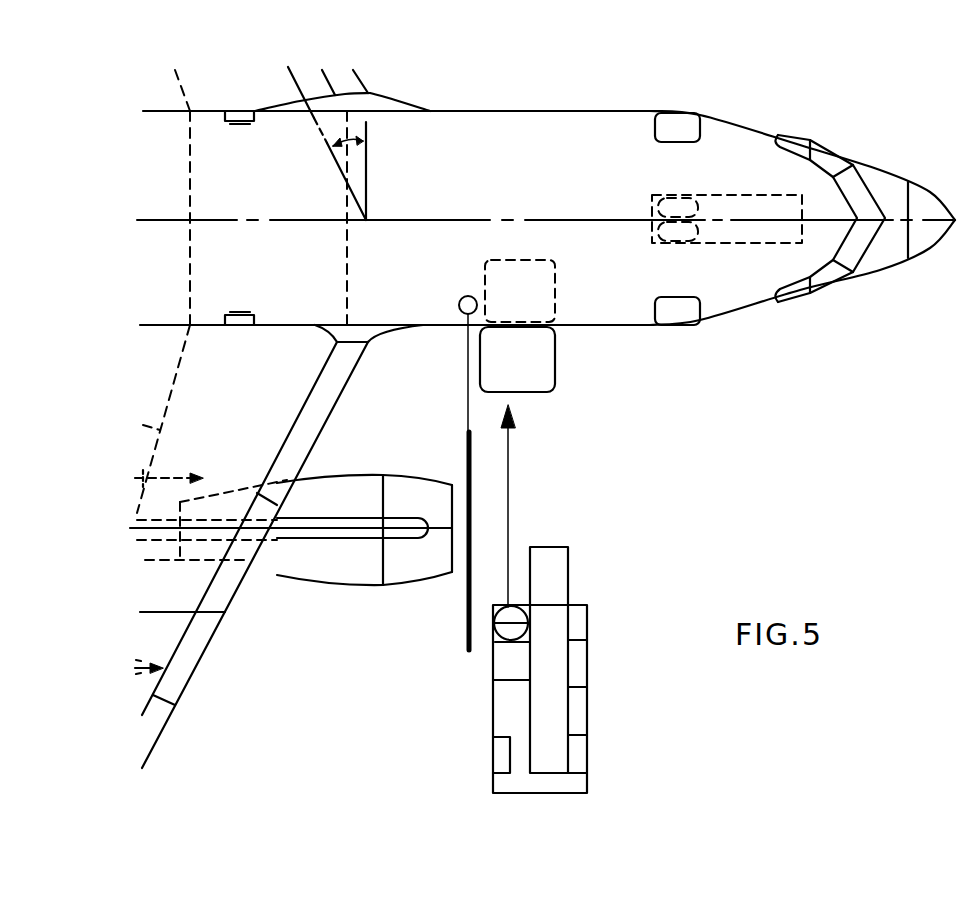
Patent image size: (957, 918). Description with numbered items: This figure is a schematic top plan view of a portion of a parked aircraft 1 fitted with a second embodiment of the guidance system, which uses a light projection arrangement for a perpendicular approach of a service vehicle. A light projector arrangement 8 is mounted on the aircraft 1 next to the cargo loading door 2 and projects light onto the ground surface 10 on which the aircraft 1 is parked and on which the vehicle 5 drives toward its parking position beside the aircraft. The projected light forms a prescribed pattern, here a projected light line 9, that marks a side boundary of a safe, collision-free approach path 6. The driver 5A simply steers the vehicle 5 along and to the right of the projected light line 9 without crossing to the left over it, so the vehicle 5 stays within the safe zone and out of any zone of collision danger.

The aircraft 1 is at (727, 307).
The cargo loading door 2 is at (548, 357).
The vehicle 5 is at (570, 687).
The driver 5A is at (493, 632).
The safe approach path 6 is at (470, 490).
The light projector arrangement 8 is at (460, 299).
The projected light line 9 is at (463, 617).
The ground surface 10 is at (646, 547).